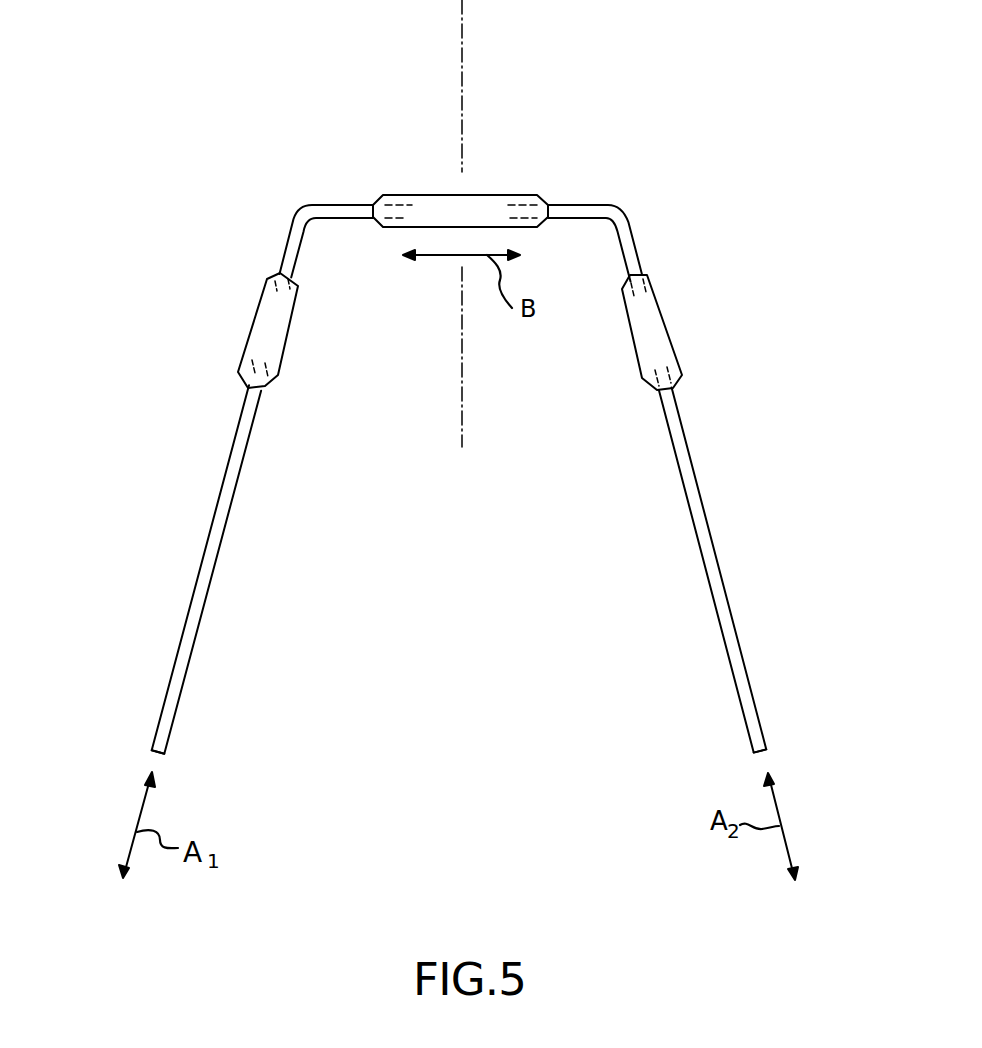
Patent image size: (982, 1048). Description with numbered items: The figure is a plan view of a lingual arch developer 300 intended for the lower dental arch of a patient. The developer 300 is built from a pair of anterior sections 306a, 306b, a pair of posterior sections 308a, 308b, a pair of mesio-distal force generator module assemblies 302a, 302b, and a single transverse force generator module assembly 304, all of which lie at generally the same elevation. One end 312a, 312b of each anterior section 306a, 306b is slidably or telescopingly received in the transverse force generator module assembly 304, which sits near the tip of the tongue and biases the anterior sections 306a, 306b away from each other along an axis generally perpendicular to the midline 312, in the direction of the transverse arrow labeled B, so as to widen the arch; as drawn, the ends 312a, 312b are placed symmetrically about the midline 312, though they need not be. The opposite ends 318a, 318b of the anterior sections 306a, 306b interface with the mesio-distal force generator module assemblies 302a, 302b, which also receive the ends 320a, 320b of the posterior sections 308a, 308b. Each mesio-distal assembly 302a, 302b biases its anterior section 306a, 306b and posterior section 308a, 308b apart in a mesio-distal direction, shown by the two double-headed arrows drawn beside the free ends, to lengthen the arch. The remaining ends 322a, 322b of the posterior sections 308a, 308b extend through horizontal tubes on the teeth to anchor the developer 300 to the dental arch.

The lingual arch developer 300 is at (459, 435).
The mesio-distal force generator module assembly 302a is at (272, 320).
The mesio-distal force generator module assembly 302b is at (698, 317).
The transverse force generator module assembly 304 is at (476, 169).
The anterior section 306a is at (320, 203).
The anterior section 306b is at (590, 204).
The posterior section 308a is at (232, 502).
The posterior section 308b is at (690, 523).
The midline 312 is at (462, 58).
The end of anterior section 312a is at (413, 210).
The end of anterior section 312b is at (506, 208).
The end of anterior section 318a is at (290, 290).
The end of anterior section 318b is at (642, 298).
The end of posterior section 320a is at (252, 341).
The end of posterior section 320b is at (657, 358).
The end of posterior section 322a is at (157, 750).
The end of posterior section 322b is at (762, 753).